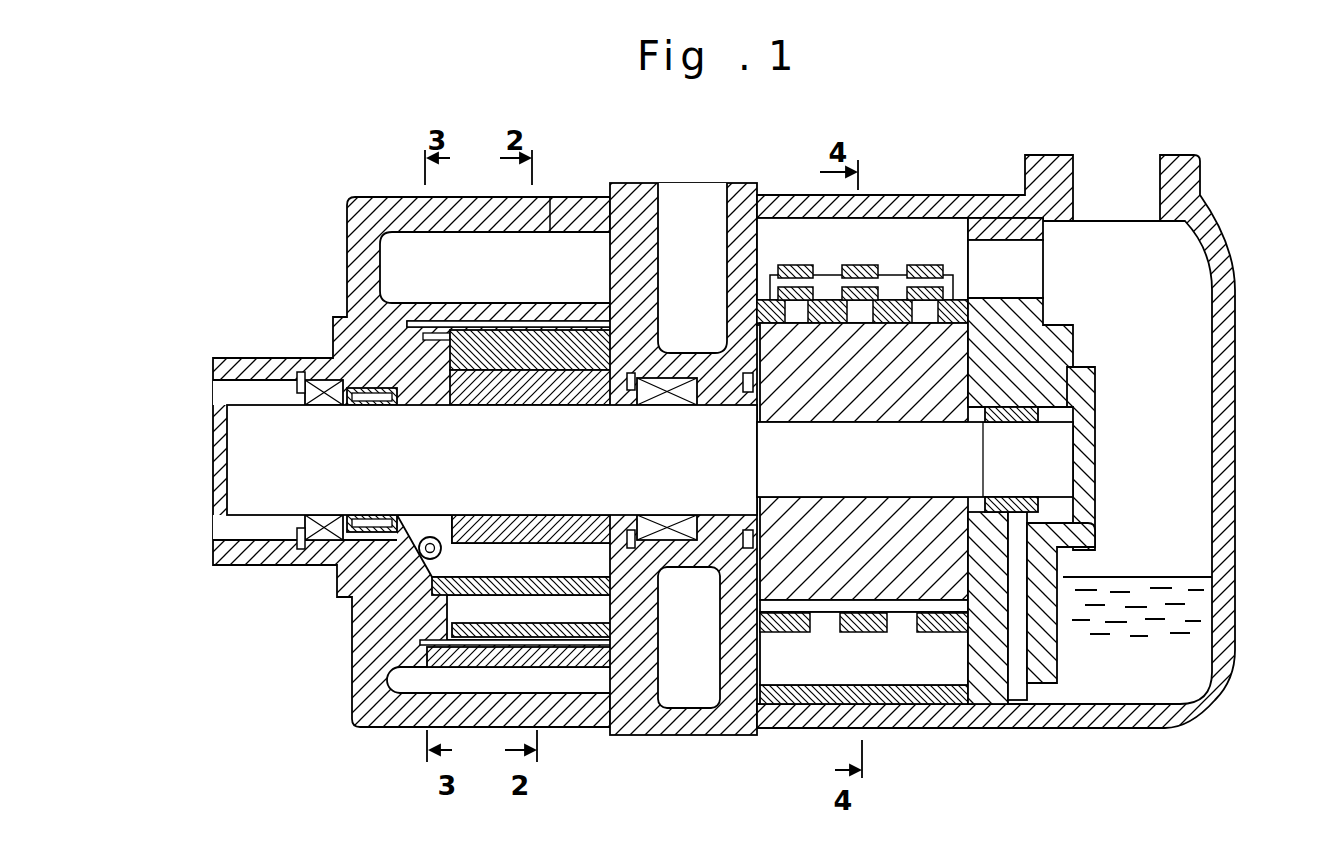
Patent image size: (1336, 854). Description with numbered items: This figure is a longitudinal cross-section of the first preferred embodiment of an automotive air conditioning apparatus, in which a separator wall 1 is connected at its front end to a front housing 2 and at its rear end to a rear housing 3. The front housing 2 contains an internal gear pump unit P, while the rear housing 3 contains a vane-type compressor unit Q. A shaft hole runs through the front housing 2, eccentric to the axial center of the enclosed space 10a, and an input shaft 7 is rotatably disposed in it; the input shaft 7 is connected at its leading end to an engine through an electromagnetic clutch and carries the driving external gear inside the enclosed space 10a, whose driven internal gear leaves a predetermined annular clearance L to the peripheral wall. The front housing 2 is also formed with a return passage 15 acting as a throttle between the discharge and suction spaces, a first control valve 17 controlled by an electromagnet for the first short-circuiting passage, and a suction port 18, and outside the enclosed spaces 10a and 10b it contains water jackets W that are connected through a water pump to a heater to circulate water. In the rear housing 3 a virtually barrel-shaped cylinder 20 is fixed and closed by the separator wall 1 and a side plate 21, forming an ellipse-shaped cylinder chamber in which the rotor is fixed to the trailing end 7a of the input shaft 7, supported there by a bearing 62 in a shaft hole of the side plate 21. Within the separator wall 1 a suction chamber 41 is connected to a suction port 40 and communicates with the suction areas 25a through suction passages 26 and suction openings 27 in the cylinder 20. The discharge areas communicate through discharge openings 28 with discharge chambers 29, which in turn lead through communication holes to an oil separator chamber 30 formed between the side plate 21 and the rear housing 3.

The separator wall 1 is at (680, 715).
The front housing 2 is at (378, 727).
The rear housing 3 is at (1232, 475).
The input shaft 7 is at (240, 490).
The trailing end of the input shaft 7a is at (937, 477).
The enclosed space 10a is at (588, 640).
The enclosed space 10b is at (425, 650).
The return passage 15 is at (432, 335).
The first control valve 17 is at (350, 613).
The suction port 18 is at (560, 215).
The cylinder 20 is at (868, 702).
The side plate 21 is at (975, 690).
The suction areas 25a is at (820, 605).
The suction passages 26 is at (847, 660).
The suction openings 27 is at (913, 622).
The discharge openings 28 is at (800, 318).
The discharge chambers 29 is at (927, 225).
The oil separator chamber 30 is at (1197, 348).
The suction port 40 is at (718, 215).
The suction chamber 41 is at (689, 637).
The bearing 62 is at (1012, 424).
The annular clearance L is at (473, 327).
The internal gear pump unit P is at (620, 624).
The vane-type compressor unit Q is at (753, 620).
The water jackets W is at (463, 285).